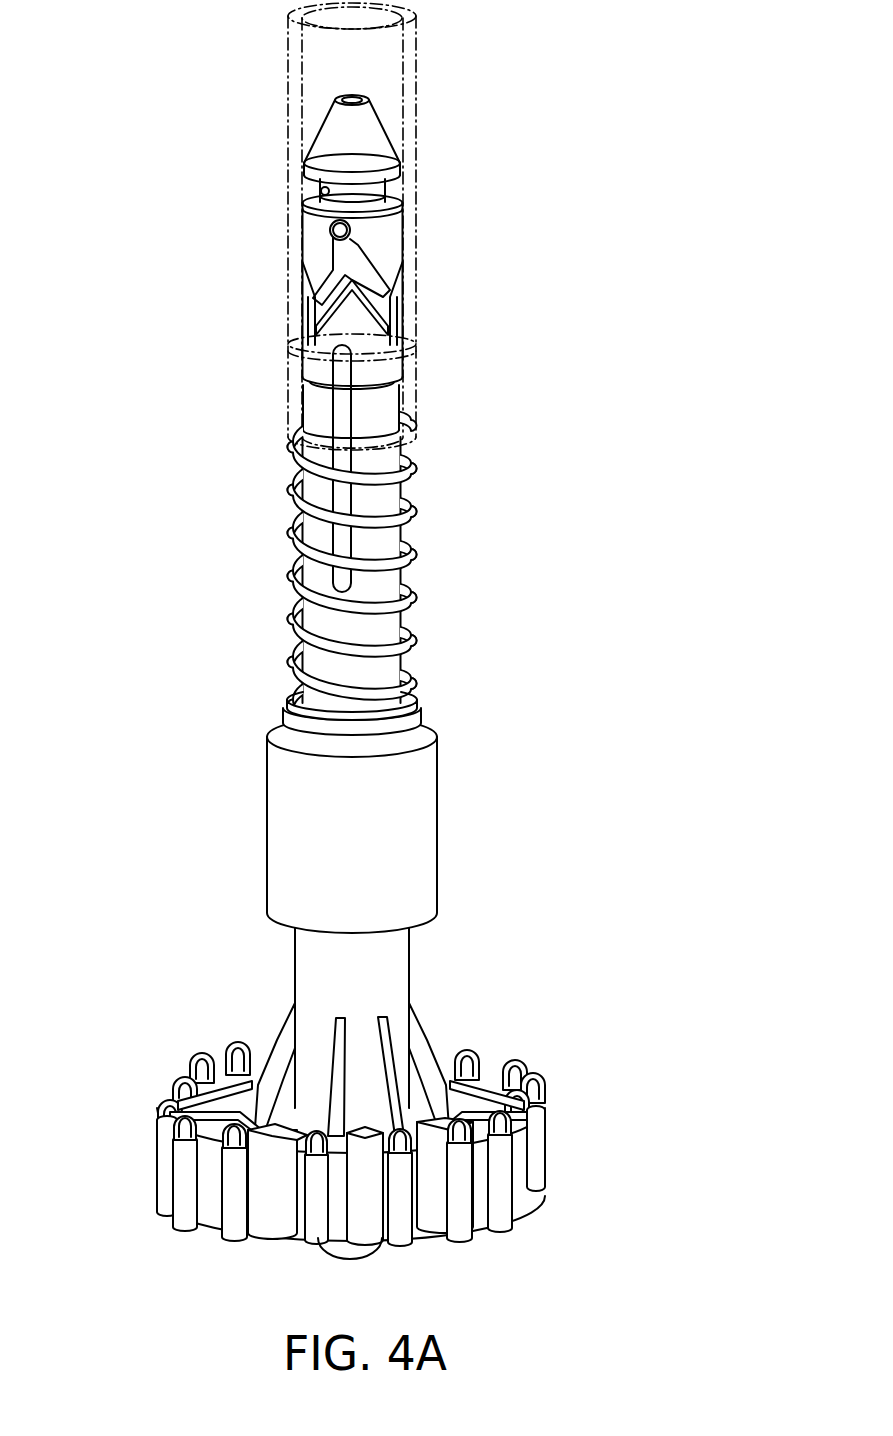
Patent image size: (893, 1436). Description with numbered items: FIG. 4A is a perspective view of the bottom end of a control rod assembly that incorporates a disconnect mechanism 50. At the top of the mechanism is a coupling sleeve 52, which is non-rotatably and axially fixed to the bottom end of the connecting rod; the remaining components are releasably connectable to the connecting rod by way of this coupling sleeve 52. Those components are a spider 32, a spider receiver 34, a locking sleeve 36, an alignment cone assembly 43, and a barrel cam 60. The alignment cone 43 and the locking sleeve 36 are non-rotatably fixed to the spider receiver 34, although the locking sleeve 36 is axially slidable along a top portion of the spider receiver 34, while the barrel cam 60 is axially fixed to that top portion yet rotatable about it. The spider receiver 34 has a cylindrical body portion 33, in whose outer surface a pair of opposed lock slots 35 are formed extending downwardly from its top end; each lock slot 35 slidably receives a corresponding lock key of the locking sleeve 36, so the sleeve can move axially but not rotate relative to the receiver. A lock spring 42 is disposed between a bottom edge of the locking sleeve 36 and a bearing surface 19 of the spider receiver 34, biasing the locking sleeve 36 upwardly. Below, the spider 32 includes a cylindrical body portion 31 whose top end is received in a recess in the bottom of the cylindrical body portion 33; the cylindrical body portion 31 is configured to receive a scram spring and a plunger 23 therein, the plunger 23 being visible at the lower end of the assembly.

The disconnect mechanism 50 is at (212, 253).
The alignment cone assembly 43 is at (378, 146).
The coupling sleeve 52 is at (452, 205).
The barrel cam 60 is at (376, 259).
The locking sleeve 36 is at (450, 388).
The cylindrical body portion 33 is at (377, 538).
The lock slot 35 is at (342, 533).
The lock spring 42 is at (417, 601).
The bearing surface 19 is at (297, 697).
The spider receiver 34 is at (475, 749).
The cylindrical body portion 31 is at (328, 968).
The spider 32 is at (127, 1118).
The plunger 23 is at (378, 1252).